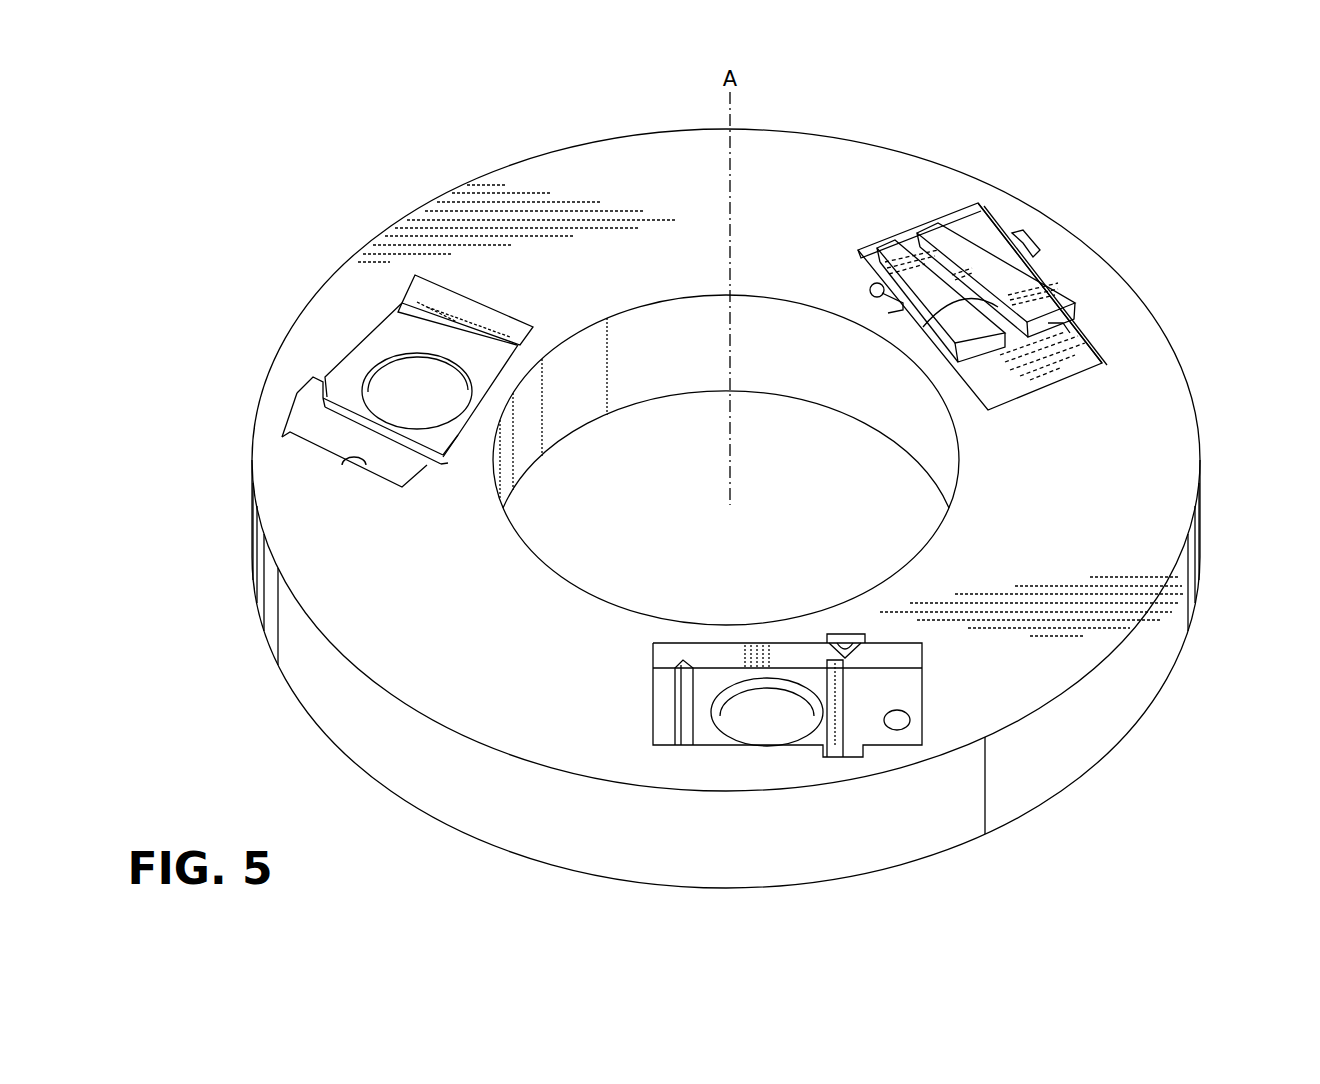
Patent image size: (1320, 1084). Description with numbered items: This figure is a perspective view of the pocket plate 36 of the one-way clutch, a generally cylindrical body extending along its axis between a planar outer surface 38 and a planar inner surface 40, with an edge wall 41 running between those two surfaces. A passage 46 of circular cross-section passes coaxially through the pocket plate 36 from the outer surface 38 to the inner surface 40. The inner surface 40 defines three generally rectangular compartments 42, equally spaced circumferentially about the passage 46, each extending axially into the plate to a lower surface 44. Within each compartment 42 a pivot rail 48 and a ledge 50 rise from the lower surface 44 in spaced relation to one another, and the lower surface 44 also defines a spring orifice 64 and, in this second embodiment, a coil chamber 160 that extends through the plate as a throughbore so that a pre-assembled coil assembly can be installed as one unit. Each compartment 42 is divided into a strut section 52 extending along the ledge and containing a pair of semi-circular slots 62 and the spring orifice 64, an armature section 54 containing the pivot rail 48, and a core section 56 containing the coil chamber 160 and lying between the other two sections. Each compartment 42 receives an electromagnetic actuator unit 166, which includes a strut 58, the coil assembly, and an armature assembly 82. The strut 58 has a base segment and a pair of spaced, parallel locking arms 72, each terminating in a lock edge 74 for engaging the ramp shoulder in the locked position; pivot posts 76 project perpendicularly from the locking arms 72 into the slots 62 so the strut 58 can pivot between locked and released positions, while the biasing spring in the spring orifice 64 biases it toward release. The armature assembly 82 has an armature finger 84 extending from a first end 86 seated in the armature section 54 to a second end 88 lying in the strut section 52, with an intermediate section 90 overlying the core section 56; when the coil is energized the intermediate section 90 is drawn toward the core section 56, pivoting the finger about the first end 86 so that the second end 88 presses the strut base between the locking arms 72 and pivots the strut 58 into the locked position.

The pocket plate 36 is at (1193, 391).
The outer surface 38 is at (733, 889).
The inner surface 40 is at (1158, 504).
The edge wall 41 is at (1122, 708).
The compartment 42 is at (334, 363).
The lower surface 44 is at (382, 352).
The passage 46 is at (792, 382).
The pivot rail 48 is at (427, 330).
The ledge 50 is at (310, 453).
The strut section 52 is at (377, 458).
The armature section 54 is at (457, 322).
The core section 56 is at (376, 362).
The strut 58 is at (993, 378).
The slot 62 is at (305, 392).
The spring orifice 64 is at (352, 465).
The locking arm 72 is at (1037, 277).
The lock edge 74 is at (1058, 276).
The pivot post 76 is at (1038, 242).
The armature assembly 82 is at (1059, 386).
The armature finger 84 is at (940, 245).
The first end 86 is at (1078, 368).
The second end 88 is at (921, 221).
The intermediate section 90 is at (962, 331).
The coil chamber 160 is at (405, 422).
The electromagnetic actuator unit 166 is at (992, 209).